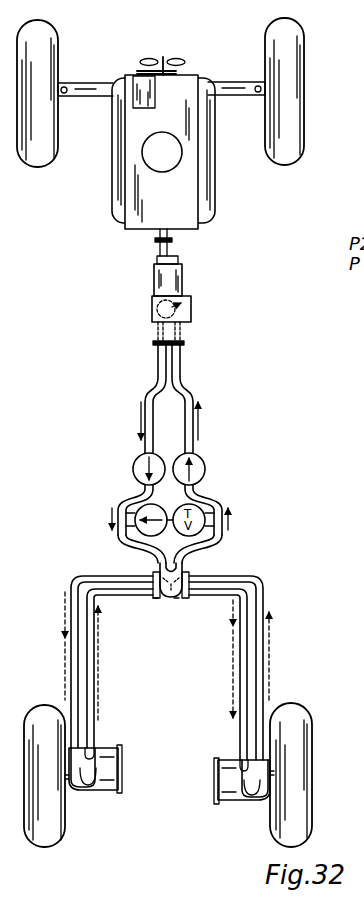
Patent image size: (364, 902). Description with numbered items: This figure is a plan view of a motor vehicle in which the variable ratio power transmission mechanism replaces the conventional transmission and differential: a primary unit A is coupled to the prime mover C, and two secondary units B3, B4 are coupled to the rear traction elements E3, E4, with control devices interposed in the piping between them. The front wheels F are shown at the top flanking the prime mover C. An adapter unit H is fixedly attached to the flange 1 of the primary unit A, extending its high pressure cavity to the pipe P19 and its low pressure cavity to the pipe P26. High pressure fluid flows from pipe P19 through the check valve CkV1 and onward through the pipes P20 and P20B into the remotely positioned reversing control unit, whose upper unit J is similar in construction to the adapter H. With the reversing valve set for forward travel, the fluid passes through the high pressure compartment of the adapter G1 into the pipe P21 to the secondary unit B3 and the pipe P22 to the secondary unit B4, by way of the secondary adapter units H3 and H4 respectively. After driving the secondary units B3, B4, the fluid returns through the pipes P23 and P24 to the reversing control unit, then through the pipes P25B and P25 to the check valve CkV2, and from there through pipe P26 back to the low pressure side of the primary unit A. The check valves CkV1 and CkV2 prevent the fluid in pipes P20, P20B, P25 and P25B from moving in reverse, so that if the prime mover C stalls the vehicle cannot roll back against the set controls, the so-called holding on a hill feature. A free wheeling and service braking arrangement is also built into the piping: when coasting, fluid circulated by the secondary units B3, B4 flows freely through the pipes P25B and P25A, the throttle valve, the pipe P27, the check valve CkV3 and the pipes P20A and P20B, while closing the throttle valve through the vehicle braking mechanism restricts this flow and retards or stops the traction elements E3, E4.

The front wheel F is at (58, 31).
The prime mover C is at (216, 206).
The primary unit A is at (188, 280).
The adapter unit H is at (194, 306).
The pipe P19 is at (157, 366).
The pipe P26 is at (180, 372).
The check valve CkV1 is at (133, 468).
The check valve CkV2 is at (206, 466).
The check valve CkV3 is at (118, 512).
The pipe P20 is at (122, 500).
The pipe P20A is at (125, 530).
The pipe P20B is at (128, 538).
The pipe P27 is at (157, 545).
The pipe P25 is at (223, 500).
The pipe P25A is at (221, 531).
The pipe P25B is at (221, 539).
The flange 1 is at (187, 568).
The pipe P23 is at (70, 584).
The pipe P21 is at (98, 597).
The pipe P24 is at (264, 594).
The pipe P22 is at (239, 611).
The adapter G1 is at (155, 600).
The upper unit J is at (176, 598).
The traction element E3 is at (53, 706).
The traction element E4 is at (305, 708).
The secondary unit B3 is at (106, 748).
The secondary unit B4 is at (234, 762).
The secondary adapter unit H3 is at (90, 777).
The secondary adapter unit H4 is at (252, 788).